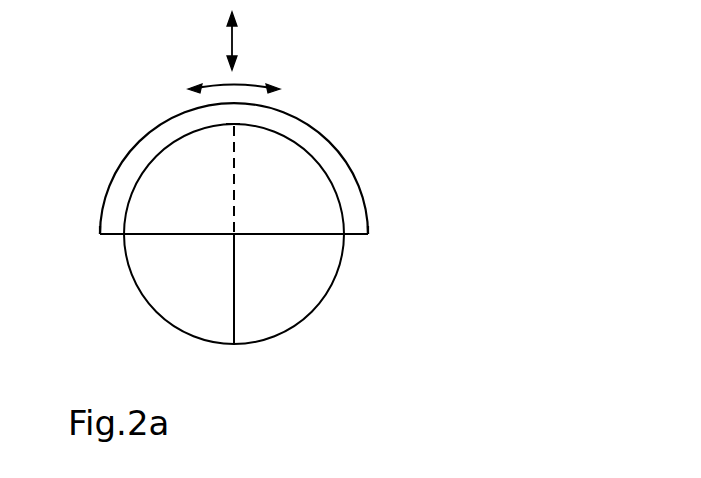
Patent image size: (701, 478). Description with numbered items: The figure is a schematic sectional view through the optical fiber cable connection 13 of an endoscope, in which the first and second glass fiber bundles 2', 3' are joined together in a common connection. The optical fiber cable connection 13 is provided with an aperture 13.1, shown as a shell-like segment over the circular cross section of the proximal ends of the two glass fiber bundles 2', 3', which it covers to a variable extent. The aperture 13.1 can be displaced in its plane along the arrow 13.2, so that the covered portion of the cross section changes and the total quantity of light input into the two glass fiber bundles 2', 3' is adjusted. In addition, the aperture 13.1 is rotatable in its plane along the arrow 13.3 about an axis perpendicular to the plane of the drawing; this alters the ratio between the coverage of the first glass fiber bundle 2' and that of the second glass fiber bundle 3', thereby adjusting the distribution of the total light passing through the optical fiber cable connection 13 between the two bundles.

The optical fiber cable connection 13 is at (350, 265).
The aperture 13.1 is at (330, 157).
The arrow 13.2 is at (247, 83).
The arrow 13.3 is at (233, 39).
The first glass fiber bundle 2' is at (162, 343).
The second glass fiber bundle 3' is at (321, 343).